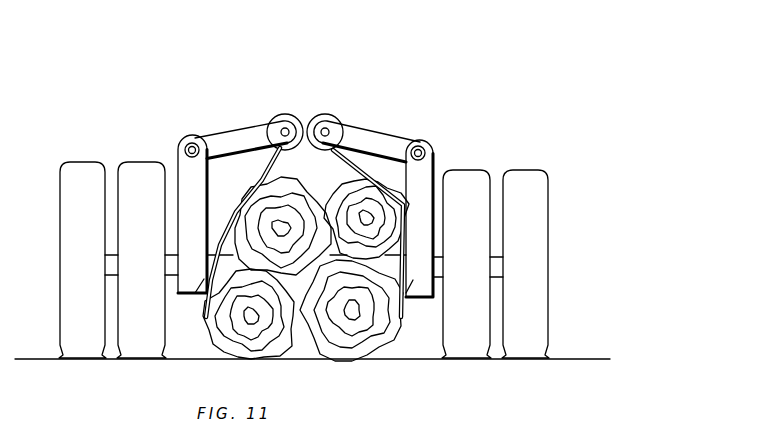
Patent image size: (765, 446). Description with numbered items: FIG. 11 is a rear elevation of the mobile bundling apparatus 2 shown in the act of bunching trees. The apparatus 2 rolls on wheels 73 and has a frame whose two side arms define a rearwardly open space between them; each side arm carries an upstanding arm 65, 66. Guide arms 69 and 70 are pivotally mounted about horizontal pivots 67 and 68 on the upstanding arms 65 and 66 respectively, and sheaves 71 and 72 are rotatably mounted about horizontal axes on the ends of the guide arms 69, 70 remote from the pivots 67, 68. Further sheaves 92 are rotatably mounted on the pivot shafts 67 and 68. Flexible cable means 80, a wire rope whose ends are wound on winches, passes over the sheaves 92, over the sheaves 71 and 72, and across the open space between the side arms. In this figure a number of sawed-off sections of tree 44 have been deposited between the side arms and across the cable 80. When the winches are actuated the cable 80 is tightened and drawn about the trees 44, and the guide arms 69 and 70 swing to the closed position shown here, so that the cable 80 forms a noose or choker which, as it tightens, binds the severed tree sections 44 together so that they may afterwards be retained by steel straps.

The mobile bundling apparatus 2 is at (376, 81).
The tree 44 is at (333, 204).
The upstanding arm 65 is at (188, 190).
The upstanding arm 66 is at (424, 185).
The horizontal pivot 67 is at (188, 147).
The horizontal pivot 68 is at (421, 156).
The guide arm 69 is at (238, 140).
The guide arm 70 is at (378, 140).
The sheave 71 is at (286, 113).
The sheave 72 is at (330, 113).
The wheels 73 is at (125, 182).
The flexible cable means 80 is at (260, 170).
The sheave 92 is at (192, 145).